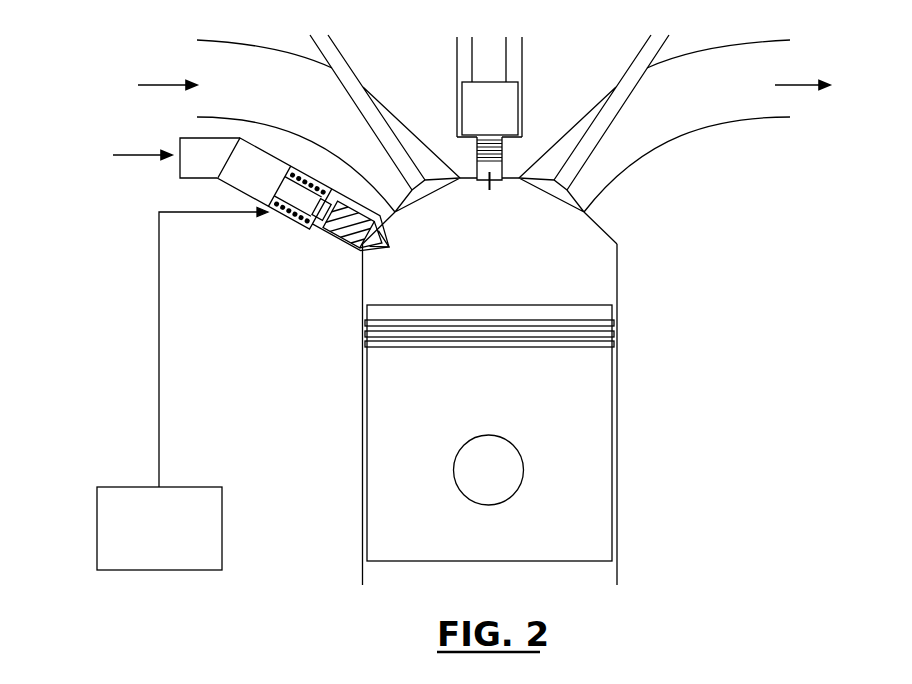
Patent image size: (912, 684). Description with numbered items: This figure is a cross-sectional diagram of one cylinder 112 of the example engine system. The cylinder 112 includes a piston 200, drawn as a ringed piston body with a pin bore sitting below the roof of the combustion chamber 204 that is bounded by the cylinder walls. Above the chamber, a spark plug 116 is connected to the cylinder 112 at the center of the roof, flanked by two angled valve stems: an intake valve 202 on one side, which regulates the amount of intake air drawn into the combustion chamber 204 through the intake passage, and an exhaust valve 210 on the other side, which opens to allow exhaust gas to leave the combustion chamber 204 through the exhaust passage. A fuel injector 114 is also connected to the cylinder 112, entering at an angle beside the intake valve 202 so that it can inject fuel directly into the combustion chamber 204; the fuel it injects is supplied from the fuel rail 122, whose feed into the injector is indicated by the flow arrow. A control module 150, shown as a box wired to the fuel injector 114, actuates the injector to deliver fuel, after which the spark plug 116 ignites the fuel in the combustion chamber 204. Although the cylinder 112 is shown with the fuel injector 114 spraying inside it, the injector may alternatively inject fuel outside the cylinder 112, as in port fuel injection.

The cylinder 112 is at (630, 351).
The fuel injector 114 is at (321, 235).
The spark plug 116 is at (507, 50).
The fuel rail 122 is at (180, 172).
The control module 150 is at (97, 528).
The piston 200 is at (483, 303).
The intake valve 202 is at (413, 205).
The combustion chamber 204 is at (580, 262).
The exhaust valve 210 is at (547, 193).